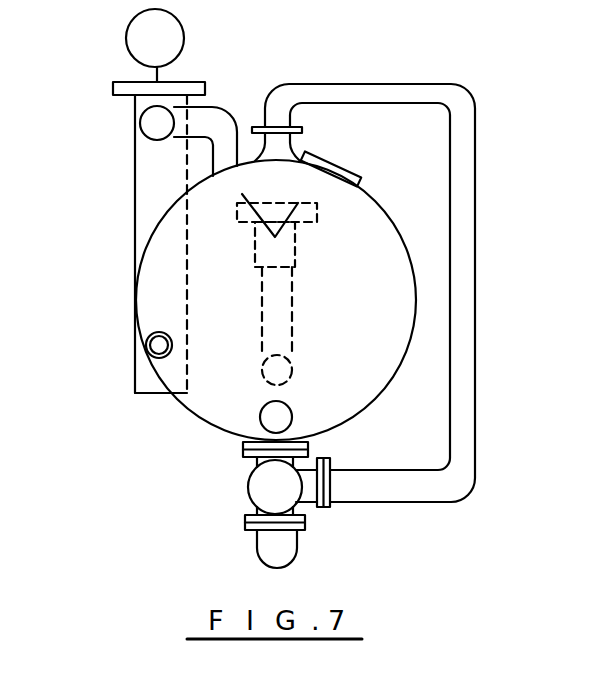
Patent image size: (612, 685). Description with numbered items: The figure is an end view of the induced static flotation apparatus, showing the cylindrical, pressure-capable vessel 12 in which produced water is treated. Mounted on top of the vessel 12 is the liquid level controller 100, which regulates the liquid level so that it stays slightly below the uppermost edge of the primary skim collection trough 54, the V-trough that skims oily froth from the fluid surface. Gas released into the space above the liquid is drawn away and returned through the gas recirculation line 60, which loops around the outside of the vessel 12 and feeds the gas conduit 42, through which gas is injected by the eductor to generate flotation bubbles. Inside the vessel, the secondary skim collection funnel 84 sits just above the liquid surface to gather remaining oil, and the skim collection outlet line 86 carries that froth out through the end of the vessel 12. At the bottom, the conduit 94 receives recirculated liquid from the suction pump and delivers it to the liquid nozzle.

The induced static flotation vessel 12 is at (360, 305).
The gas conduit 42 is at (248, 492).
The primary skim collection trough 54 is at (307, 203).
The gas recirculation line 60 is at (363, 84).
The skim collection funnel 84 is at (316, 211).
The skim collection outlet line 86 is at (266, 378).
The conduit 94 is at (255, 550).
The liquid level controller 100 is at (125, 41).